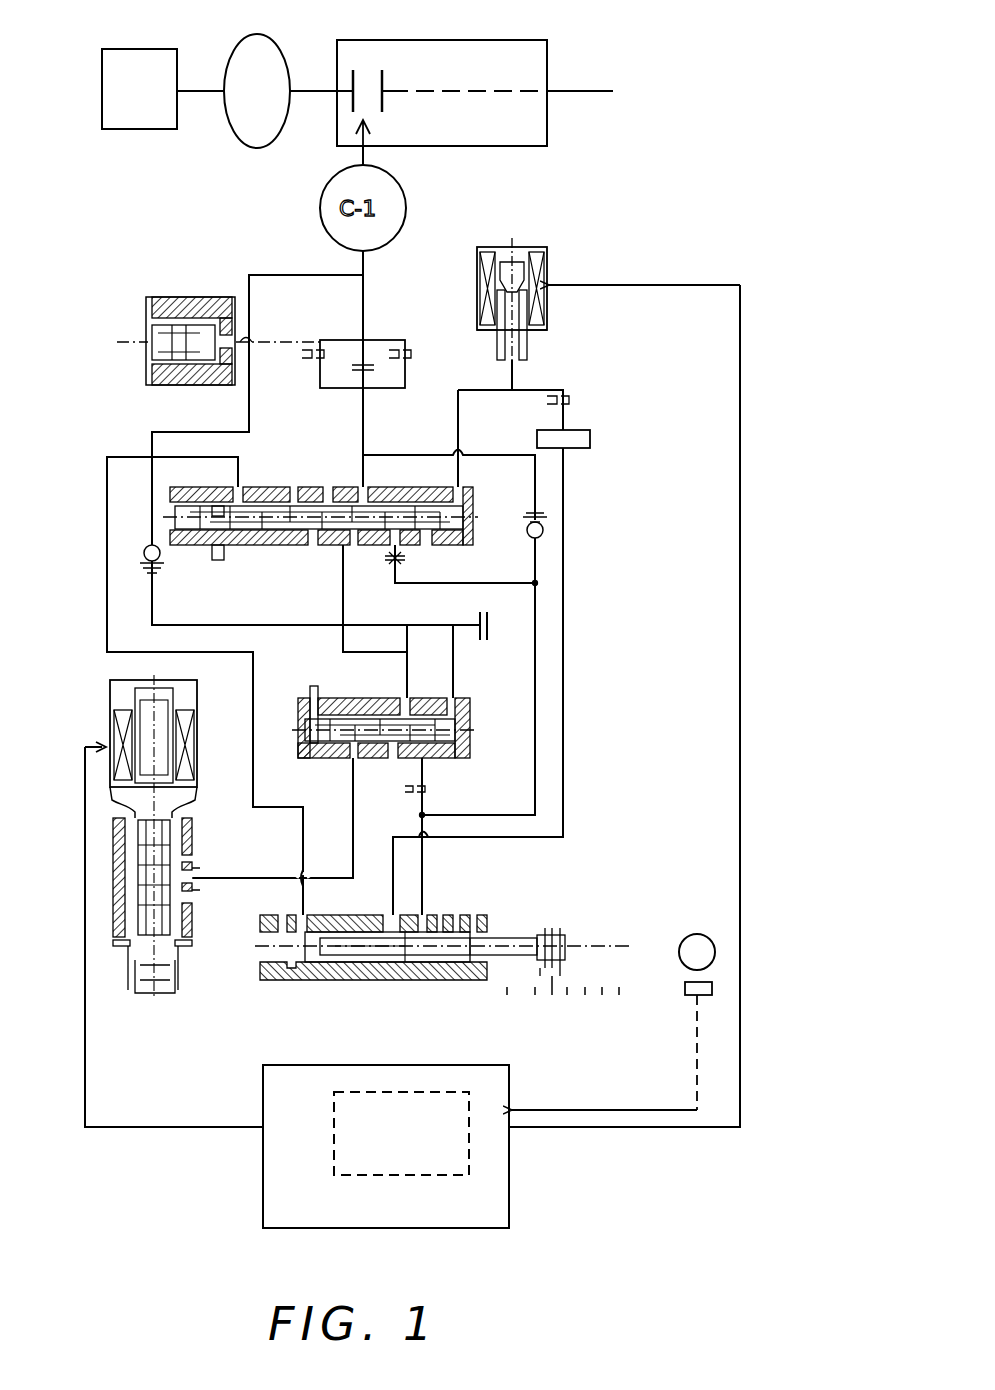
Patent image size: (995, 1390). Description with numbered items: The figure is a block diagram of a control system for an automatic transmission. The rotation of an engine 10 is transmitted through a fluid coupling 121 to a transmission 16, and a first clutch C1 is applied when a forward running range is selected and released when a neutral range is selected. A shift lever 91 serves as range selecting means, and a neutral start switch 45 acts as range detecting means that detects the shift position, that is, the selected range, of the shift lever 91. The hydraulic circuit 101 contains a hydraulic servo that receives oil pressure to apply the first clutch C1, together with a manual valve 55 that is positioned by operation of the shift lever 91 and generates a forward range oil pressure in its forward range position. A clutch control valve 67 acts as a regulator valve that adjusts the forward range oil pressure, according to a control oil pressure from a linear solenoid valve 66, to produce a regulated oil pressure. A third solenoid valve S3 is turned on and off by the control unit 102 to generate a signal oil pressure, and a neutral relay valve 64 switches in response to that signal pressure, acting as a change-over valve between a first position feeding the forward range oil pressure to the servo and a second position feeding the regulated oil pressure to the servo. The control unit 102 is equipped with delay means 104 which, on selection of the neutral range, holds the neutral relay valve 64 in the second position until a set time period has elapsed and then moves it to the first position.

The engine 10 is at (172, 50).
The fluid coupling 121 is at (288, 36).
The first clutch C1 is at (368, 72).
The transmission 16 is at (548, 58).
The third solenoid valve S3 is at (513, 305).
The neutral relay valve 64 is at (474, 504).
The hydraulic circuit 101 is at (628, 571).
The linear solenoid valve 66 is at (198, 728).
The C-1 control valve 67 is at (471, 721).
The manual valve 55 is at (489, 906).
The shift lever 91 is at (699, 934).
The neutral start switch 45 is at (712, 988).
The control unit 102 is at (510, 1076).
The delay means 104 is at (469, 1165).